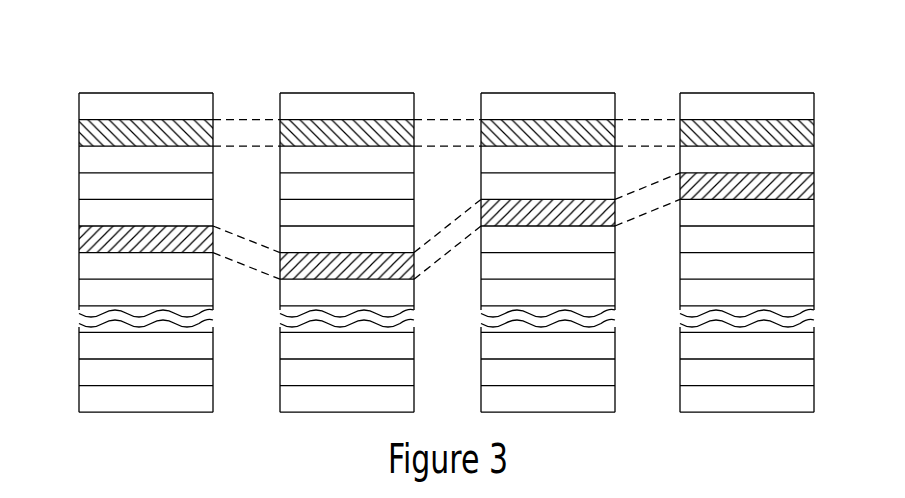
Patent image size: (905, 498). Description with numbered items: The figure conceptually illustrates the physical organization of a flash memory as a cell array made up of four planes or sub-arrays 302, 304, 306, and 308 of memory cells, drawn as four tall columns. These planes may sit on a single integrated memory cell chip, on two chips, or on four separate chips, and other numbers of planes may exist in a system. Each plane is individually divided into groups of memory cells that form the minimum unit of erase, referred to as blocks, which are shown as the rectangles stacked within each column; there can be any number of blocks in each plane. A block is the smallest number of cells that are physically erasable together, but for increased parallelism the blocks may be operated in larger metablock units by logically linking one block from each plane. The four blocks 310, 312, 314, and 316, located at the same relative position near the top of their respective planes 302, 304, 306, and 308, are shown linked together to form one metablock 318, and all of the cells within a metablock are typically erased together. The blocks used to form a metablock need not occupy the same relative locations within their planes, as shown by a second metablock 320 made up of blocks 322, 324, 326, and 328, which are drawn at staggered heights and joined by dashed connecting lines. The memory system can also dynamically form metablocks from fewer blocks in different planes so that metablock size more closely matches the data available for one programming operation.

The plane 302 is at (124, 215).
The plane 304 is at (328, 215).
The plane 306 is at (522, 215).
The plane 308 is at (778, 215).
The block 310 is at (125, 136).
The block 312 is at (325, 136).
The block 314 is at (527, 136).
The block 316 is at (775, 133).
The metablock 318 is at (657, 118).
The second metablock 320 is at (645, 182).
The block 322 is at (122, 240).
The block 324 is at (325, 264).
The block 326 is at (533, 210).
The block 328 is at (775, 185).